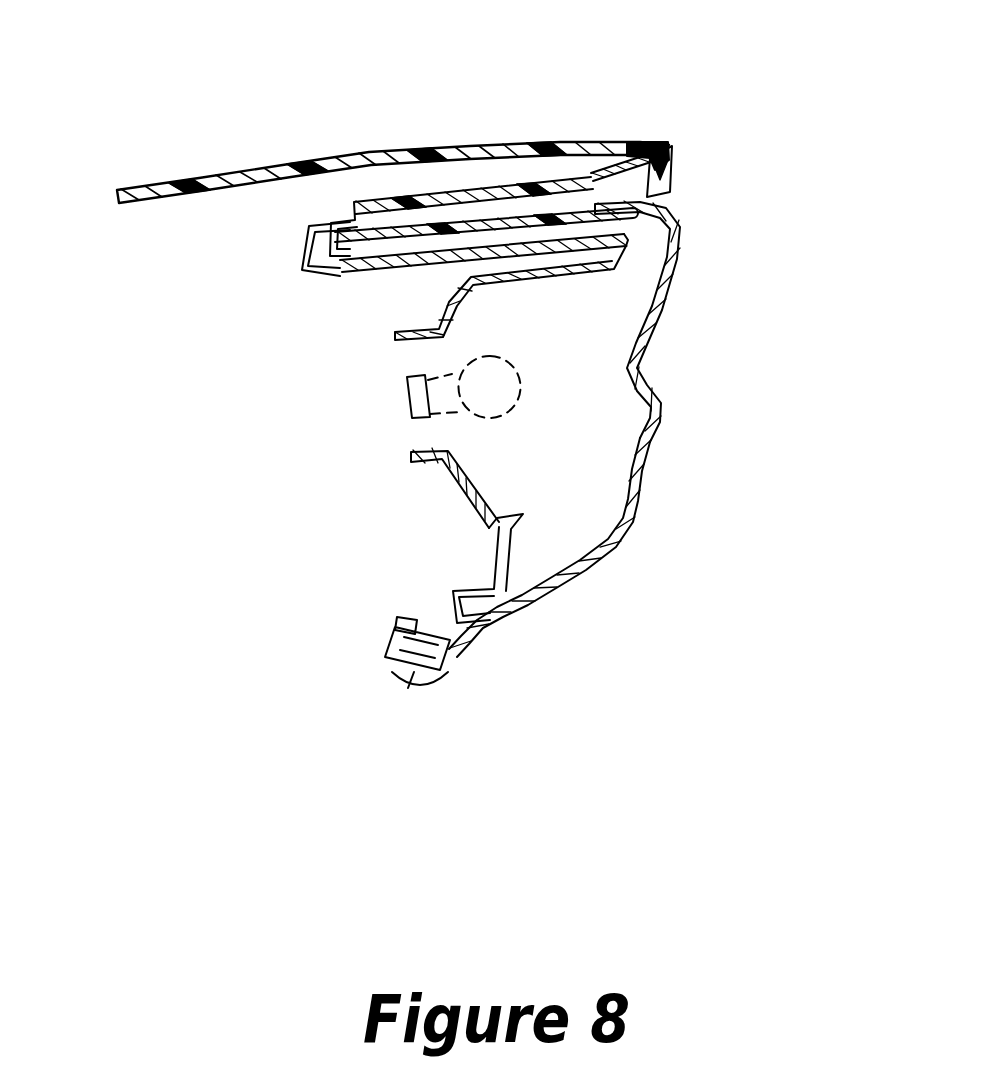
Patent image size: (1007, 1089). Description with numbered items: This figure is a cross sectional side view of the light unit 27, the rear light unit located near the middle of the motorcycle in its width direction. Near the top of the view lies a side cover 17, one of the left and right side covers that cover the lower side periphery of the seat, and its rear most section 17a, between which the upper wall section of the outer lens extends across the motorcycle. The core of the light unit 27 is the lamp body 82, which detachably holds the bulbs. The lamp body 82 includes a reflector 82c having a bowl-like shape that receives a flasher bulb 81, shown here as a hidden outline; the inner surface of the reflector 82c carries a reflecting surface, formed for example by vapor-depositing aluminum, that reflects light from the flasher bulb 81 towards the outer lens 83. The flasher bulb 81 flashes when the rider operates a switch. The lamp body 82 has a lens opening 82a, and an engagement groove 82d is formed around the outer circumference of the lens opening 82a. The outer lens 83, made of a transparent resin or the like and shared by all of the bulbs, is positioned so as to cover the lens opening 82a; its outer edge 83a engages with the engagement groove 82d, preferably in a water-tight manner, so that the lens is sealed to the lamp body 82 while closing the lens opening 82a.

The side cover 17 is at (180, 182).
The rear most section 17a is at (570, 143).
The light unit 27 is at (695, 294).
The flasher bulb 81 is at (513, 413).
The lamp body 82 is at (355, 456).
The lens opening 82a is at (505, 617).
The reflector 82c is at (452, 302).
The engagement groove 82d is at (317, 243).
The outer lens 83 is at (629, 531).
The outer edge 83a is at (333, 223).